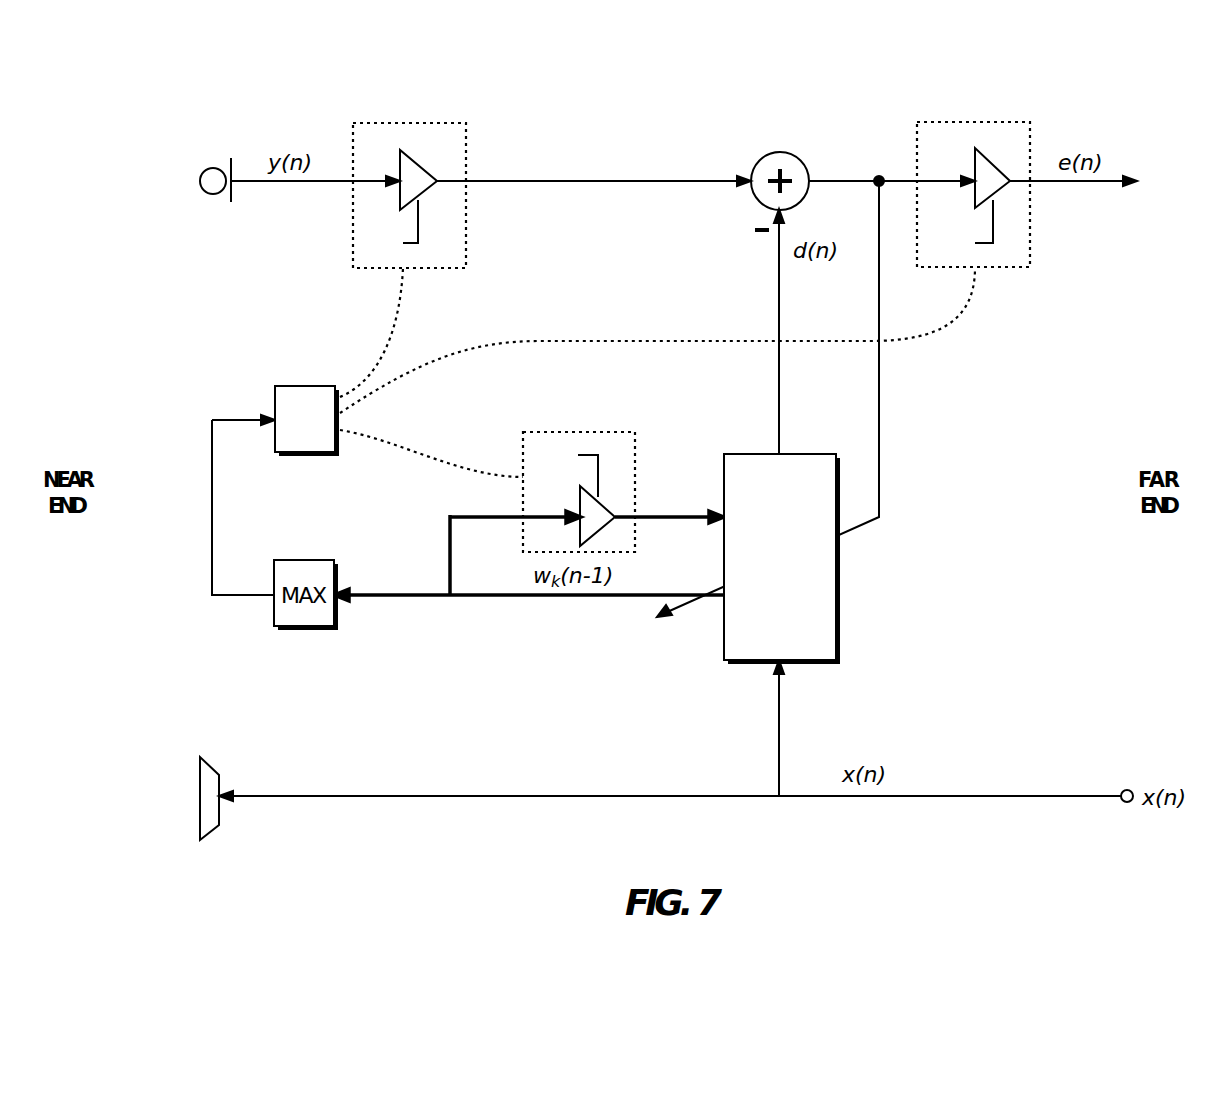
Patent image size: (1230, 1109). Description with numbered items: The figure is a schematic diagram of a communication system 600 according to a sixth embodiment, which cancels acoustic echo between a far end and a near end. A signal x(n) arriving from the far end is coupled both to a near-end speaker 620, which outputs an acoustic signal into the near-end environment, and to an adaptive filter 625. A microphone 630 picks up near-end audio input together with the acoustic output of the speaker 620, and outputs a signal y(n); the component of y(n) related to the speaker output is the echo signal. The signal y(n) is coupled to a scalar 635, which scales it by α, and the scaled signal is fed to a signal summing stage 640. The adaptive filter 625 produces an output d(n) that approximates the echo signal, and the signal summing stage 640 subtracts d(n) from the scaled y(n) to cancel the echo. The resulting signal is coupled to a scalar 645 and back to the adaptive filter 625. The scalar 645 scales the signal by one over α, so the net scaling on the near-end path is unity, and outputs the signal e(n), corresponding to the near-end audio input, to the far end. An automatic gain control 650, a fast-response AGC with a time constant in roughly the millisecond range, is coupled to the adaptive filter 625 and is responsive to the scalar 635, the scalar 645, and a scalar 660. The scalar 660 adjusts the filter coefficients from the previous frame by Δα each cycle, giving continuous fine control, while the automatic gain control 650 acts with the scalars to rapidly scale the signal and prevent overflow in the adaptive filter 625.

The communication system 600 is at (1086, 58).
The speaker 620 is at (212, 828).
The adaptive filter 625 is at (840, 610).
The microphone 630 is at (213, 168).
The scalar 635 is at (420, 160).
The signal summing stage 640 is at (782, 152).
The scalar 645 is at (992, 157).
The automatic gain control 650 is at (292, 386).
The scalar 660 is at (608, 507).